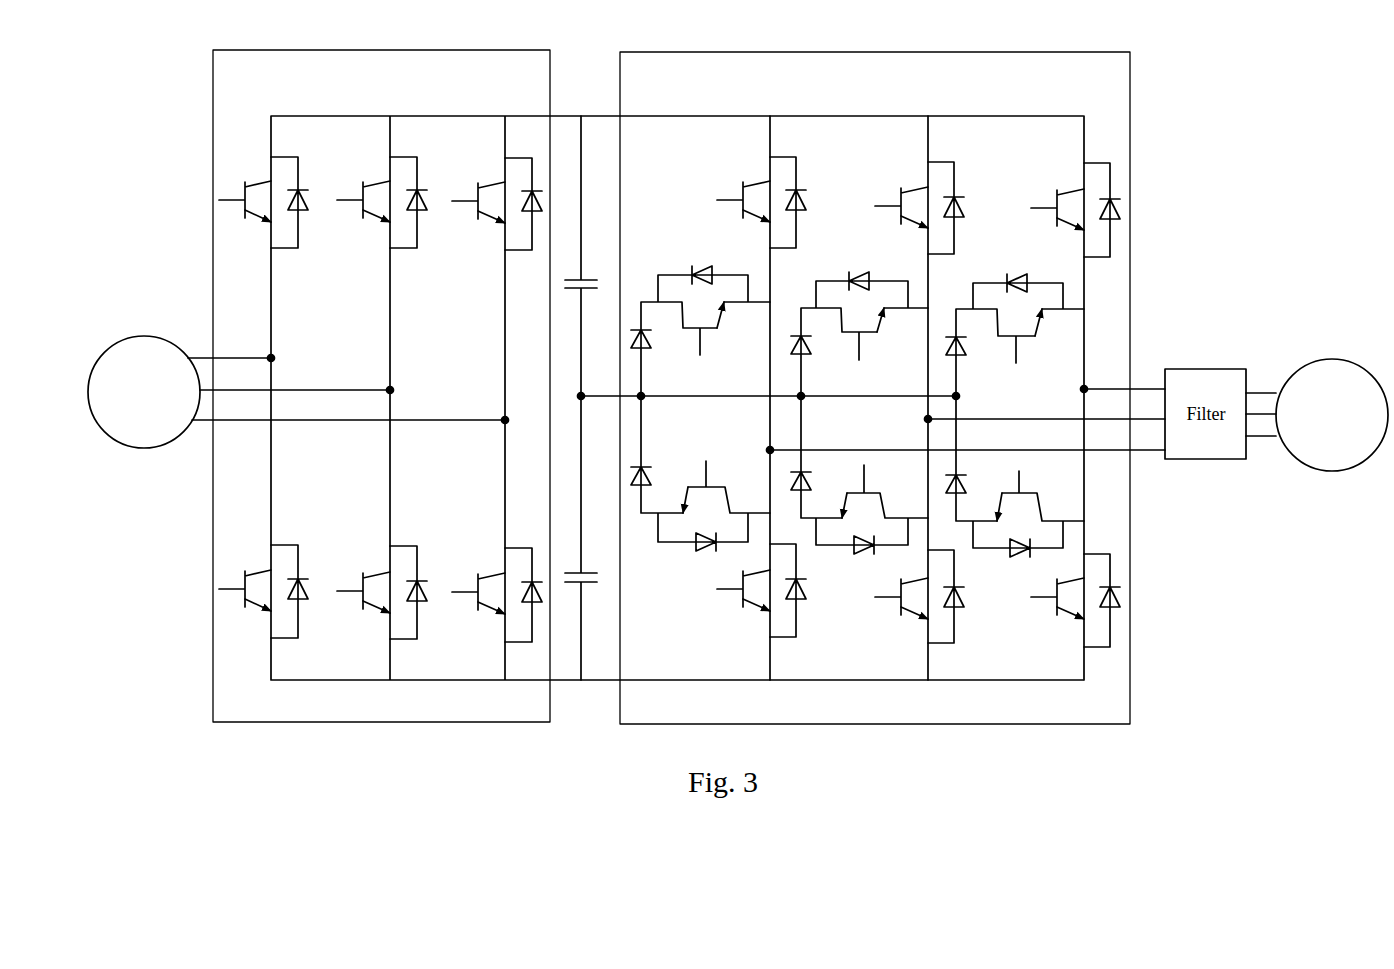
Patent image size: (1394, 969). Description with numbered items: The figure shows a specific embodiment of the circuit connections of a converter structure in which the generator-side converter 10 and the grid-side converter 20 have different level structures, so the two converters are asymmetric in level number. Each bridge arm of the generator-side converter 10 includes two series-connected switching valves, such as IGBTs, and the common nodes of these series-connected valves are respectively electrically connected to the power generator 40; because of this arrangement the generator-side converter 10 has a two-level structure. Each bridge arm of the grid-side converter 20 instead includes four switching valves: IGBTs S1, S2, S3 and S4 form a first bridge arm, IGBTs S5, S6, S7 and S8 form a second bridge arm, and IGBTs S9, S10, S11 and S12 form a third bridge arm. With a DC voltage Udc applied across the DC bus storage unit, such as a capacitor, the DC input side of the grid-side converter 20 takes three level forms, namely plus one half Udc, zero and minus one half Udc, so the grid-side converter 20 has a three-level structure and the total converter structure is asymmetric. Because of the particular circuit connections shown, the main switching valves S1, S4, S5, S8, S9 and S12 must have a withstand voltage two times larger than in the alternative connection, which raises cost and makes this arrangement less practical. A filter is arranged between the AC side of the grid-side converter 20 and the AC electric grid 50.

The generator-side converter 10 is at (213, 96).
The grid-side converter 20 is at (1130, 87).
The power generator 40 is at (160, 337).
The AC electric grid 50 is at (1328, 359).
The IGBT S1 is at (746, 202).
The IGBT S2 is at (700, 331).
The IGBT S3 is at (700, 473).
The IGBT S4 is at (747, 590).
The IGBT S5 is at (903, 208).
The IGBT S6 is at (859, 334).
The IGBT S7 is at (859, 475).
The IGBT S8 is at (905, 596).
The IGBT S9 is at (1061, 210).
The IGBT S10 is at (1015, 335).
The IGBT S11 is at (1015, 476).
The IGBT S12 is at (1058, 600).